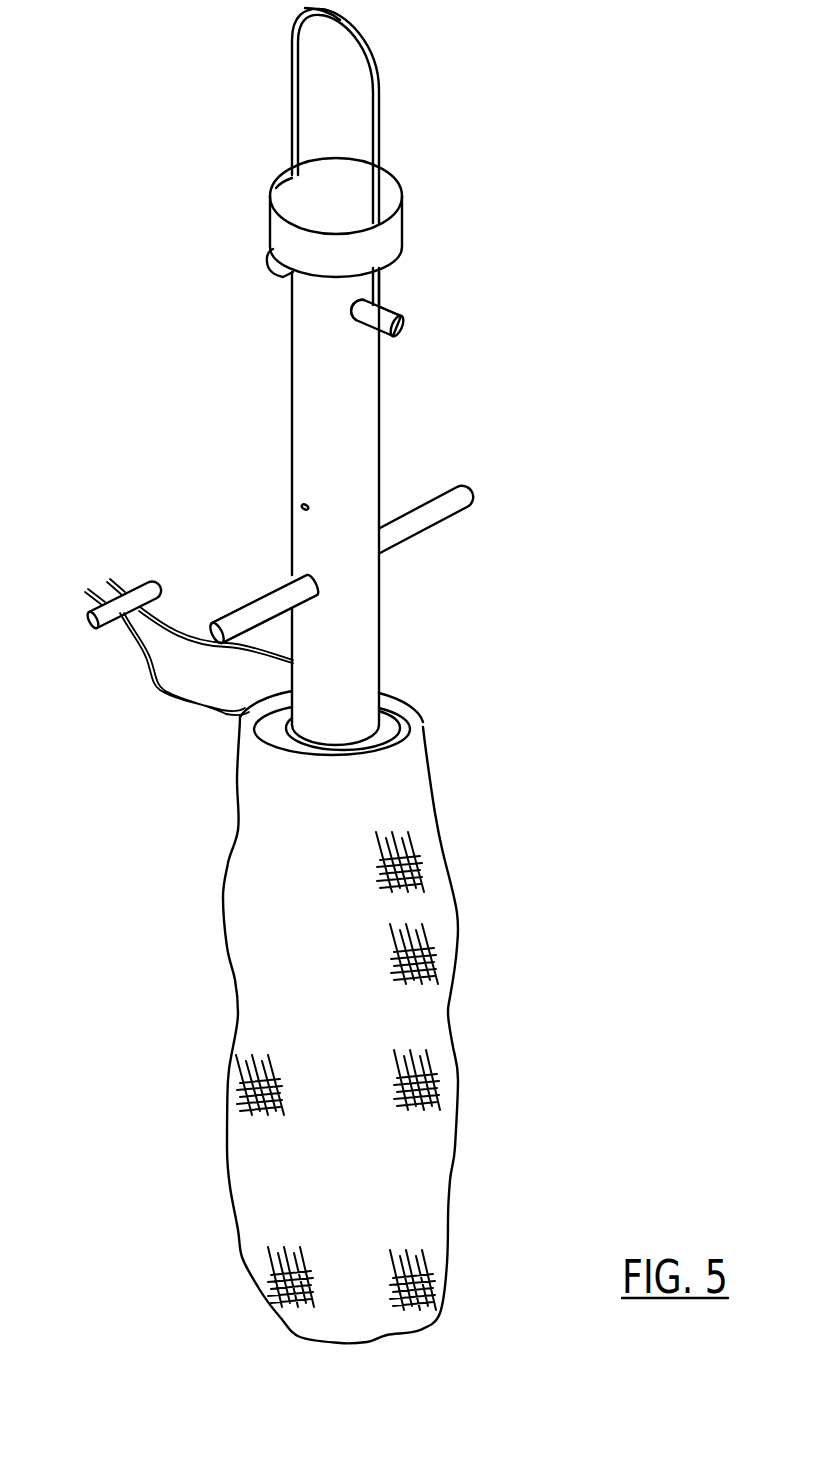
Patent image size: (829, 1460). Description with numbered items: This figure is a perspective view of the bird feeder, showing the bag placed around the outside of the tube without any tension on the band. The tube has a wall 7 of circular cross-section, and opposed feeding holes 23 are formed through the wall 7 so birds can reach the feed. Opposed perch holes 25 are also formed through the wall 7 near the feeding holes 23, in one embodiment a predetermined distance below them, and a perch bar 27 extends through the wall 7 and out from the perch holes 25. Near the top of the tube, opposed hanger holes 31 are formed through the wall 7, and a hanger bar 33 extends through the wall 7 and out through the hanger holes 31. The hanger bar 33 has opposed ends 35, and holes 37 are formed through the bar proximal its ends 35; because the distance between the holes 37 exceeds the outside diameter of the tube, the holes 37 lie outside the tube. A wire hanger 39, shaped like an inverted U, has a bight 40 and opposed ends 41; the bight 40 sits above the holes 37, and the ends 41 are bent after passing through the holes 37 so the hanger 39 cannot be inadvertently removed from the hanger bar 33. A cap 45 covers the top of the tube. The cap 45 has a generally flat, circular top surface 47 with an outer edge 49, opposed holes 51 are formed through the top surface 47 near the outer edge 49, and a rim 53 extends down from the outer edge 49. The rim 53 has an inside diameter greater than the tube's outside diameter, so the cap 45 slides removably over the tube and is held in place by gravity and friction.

The wall 7 is at (357, 440).
The feeding holes 23 is at (302, 506).
The perch holes 25 is at (250, 590).
The perch bar 27 is at (420, 523).
The hanger holes 31 is at (358, 318).
The hanger bar 33 is at (396, 311).
The ends of hanger bar 35 is at (405, 328).
The holes in hanger bar 37 is at (385, 308).
The wire hanger 39 is at (383, 127).
The bight 40 is at (348, 30).
The ends of wire hanger 41 is at (377, 283).
The cap 45 is at (252, 200).
The top surface 47 is at (283, 182).
The outer edge 49 is at (268, 236).
The holes in cap top 51 is at (282, 182).
The rim 53 is at (347, 255).